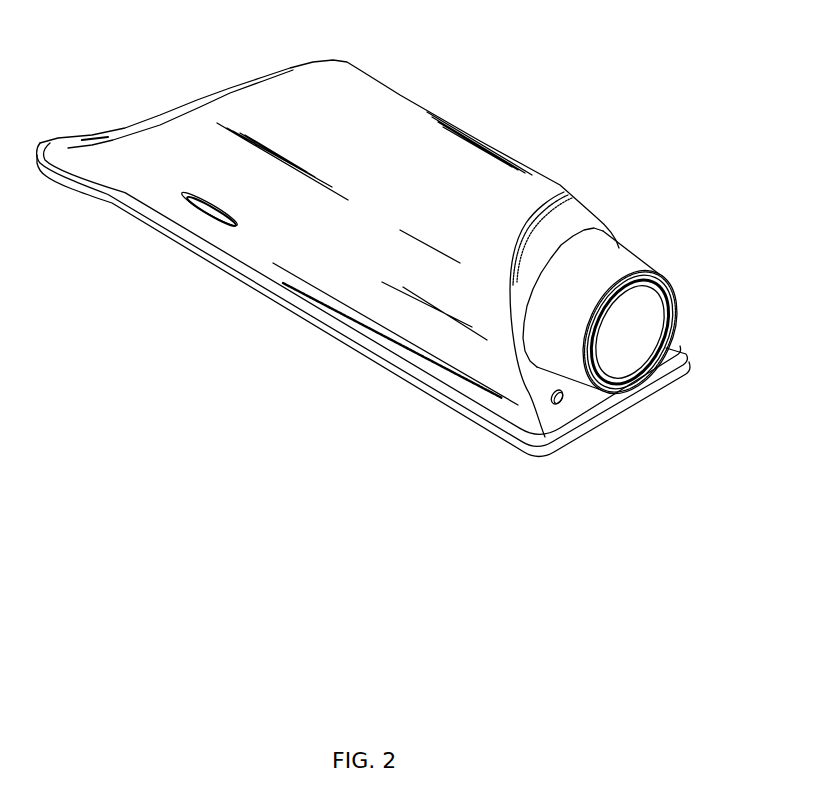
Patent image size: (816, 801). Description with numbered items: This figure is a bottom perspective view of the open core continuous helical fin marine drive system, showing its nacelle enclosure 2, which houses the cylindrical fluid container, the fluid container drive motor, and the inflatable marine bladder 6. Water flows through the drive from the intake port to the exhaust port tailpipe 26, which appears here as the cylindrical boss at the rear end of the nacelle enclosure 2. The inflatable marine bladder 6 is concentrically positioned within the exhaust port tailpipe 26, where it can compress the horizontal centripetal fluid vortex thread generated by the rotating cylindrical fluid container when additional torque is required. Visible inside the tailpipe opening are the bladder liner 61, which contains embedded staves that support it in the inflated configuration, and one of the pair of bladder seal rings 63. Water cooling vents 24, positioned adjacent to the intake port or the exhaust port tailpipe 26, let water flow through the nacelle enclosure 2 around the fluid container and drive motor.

The nacelle enclosure 2 is at (374, 243).
The water cooling vents 24 is at (200, 201).
The exhaust port tailpipe 26 is at (632, 262).
The bladder liner 61 is at (650, 318).
The inflatable marine bladder 6 is at (640, 342).
The bladder seal rings 63 is at (618, 393).